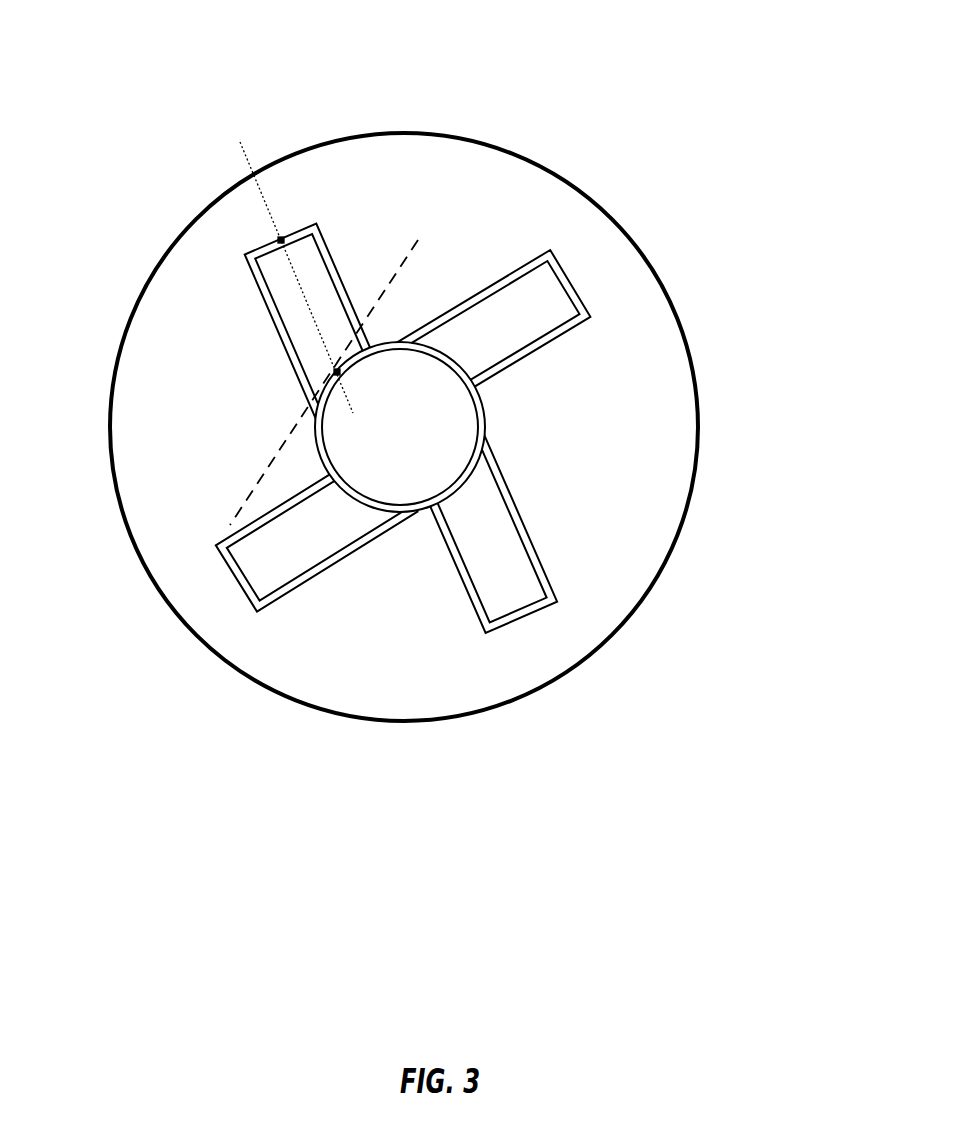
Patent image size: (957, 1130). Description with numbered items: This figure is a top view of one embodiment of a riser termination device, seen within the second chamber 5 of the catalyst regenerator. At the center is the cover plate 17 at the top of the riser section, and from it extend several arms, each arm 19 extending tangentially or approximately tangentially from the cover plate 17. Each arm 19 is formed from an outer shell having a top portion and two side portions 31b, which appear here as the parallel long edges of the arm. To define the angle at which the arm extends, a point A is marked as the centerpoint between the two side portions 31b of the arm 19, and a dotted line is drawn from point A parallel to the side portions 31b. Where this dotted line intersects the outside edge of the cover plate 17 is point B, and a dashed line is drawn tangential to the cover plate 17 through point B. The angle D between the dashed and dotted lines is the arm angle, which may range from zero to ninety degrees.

The second chamber 5 is at (698, 417).
The cover plate 17 is at (487, 421).
The arm 19 is at (495, 557).
The side portions 31b is at (330, 240).
The point A is at (281, 240).
The point B is at (337, 372).
The angle D is at (318, 327).